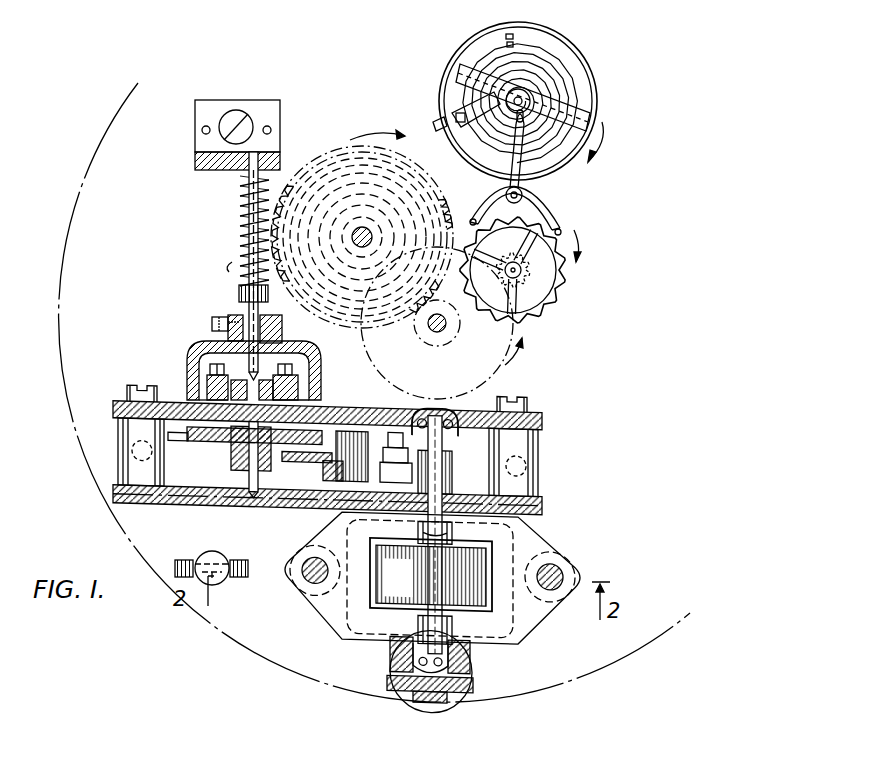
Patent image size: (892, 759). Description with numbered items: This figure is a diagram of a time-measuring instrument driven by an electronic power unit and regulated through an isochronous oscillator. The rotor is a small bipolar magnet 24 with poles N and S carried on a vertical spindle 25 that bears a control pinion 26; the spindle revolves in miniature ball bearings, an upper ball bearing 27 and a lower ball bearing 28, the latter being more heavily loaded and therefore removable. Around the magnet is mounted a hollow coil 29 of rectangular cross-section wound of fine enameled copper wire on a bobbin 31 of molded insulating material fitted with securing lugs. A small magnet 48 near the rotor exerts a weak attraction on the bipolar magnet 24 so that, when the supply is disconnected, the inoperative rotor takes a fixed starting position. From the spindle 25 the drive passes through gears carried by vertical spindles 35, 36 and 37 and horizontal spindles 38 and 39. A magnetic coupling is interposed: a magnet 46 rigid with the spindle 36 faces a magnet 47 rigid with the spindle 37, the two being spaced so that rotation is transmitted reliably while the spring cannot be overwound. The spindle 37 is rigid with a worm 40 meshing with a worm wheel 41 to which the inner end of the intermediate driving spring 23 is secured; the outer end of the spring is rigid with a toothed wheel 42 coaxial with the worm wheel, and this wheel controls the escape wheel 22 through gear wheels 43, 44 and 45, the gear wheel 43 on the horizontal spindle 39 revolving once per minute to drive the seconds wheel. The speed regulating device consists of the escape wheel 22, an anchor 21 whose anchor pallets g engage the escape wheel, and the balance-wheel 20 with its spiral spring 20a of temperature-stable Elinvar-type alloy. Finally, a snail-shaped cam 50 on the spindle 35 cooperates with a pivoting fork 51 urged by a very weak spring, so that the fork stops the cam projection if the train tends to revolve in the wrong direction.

The balance-wheel 20 is at (592, 90).
The spiral spring 20a is at (565, 70).
The anchor 21 is at (555, 215).
The escape wheel 22 is at (563, 282).
The gear wheel 45 is at (557, 302).
The anchor pallets g is at (577, 233).
The toothed wheel 42 is at (440, 193).
The worm wheel 41 is at (317, 166).
The intermediate driving spring 23 is at (333, 190).
The horizontal spindle 38 is at (366, 228).
The gear wheel 44 is at (366, 352).
The gear wheel 43 is at (450, 348).
The horizontal spindle 39 is at (430, 331).
The worm 40 is at (246, 232).
The vertical spindle 37 is at (246, 310).
The magnet 47 is at (198, 350).
The north pole N is at (192, 388).
The south pole S is at (318, 384).
The vertical spindle 35 is at (300, 502).
The pivoting fork 51 is at (318, 507).
The vertical spindle 36 is at (248, 470).
The magnet 46 is at (220, 444).
The snail-shaped cam 50 is at (330, 470).
The upper ball bearing 27 is at (412, 406).
The control pinion 26 is at (449, 462).
The vertical spindle 25 is at (442, 496).
The hollow coil 29 is at (505, 620).
The bobbin 31 is at (540, 546).
The bipolar magnet 24 is at (385, 610).
The lower ball bearing 28 is at (462, 673).
The small magnet 48 is at (186, 560).